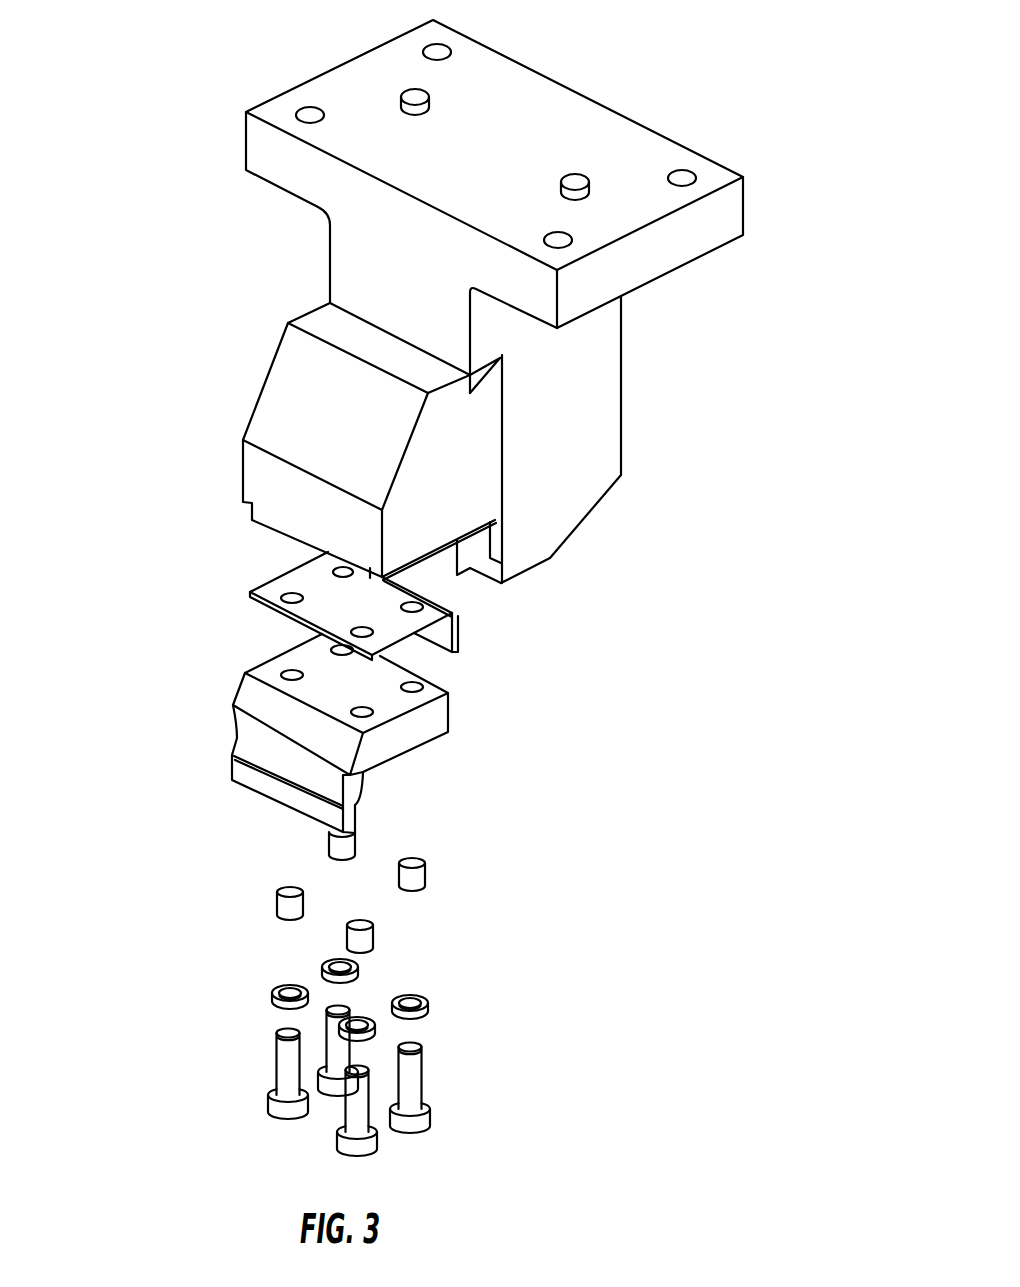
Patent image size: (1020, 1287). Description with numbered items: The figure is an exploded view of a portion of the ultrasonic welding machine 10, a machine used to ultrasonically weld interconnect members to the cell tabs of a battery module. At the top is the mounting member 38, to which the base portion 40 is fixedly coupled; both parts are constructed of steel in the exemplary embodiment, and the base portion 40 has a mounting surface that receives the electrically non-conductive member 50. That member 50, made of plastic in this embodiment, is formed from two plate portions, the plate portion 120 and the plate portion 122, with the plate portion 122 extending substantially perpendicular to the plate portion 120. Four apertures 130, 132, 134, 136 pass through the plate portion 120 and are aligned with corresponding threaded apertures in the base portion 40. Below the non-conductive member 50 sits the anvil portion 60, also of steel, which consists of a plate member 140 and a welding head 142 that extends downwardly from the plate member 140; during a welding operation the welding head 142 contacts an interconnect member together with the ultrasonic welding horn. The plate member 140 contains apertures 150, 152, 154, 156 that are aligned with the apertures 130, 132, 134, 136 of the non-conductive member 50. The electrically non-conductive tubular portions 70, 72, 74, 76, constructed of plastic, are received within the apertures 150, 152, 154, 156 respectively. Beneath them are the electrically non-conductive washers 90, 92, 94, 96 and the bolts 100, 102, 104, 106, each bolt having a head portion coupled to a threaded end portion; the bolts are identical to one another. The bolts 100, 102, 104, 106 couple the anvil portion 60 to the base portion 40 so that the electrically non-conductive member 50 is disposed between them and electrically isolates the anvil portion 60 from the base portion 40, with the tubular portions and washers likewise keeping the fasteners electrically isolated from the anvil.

The ultrasonic welding machine 10 is at (150, 168).
The mounting member 38 is at (725, 232).
The base portion 40 is at (288, 388).
The electrically non-conductive member 50 is at (367, 614).
The anvil portion 60 is at (336, 750).
The electrically non-conductive tubular portion 70 is at (368, 940).
The electrically non-conductive tubular portion 72 is at (420, 883).
The electrically non-conductive tubular portion 74 is at (297, 905).
The electrically non-conductive tubular portion 76 is at (342, 845).
The electrically non-conductive washer 90 is at (360, 1020).
The electrically non-conductive washer 92 is at (428, 998).
The electrically non-conductive washer 94 is at (280, 988).
The electrically non-conductive washer 96 is at (332, 960).
The bolt 100 is at (362, 1145).
The bolt 102 is at (420, 1122).
The bolt 104 is at (285, 1113).
The bolt 106 is at (337, 1045).
The plate portion 120 is at (413, 629).
The plate portion 122 is at (458, 645).
The aperture 130 is at (362, 630).
The aperture 132 is at (412, 606).
The aperture 134 is at (290, 600).
The aperture 136 is at (337, 560).
The plate member 140 is at (345, 719).
The welding head 142 is at (290, 802).
The aperture 150 is at (362, 718).
The aperture 152 is at (413, 692).
The aperture 154 is at (292, 673).
The aperture 156 is at (342, 653).